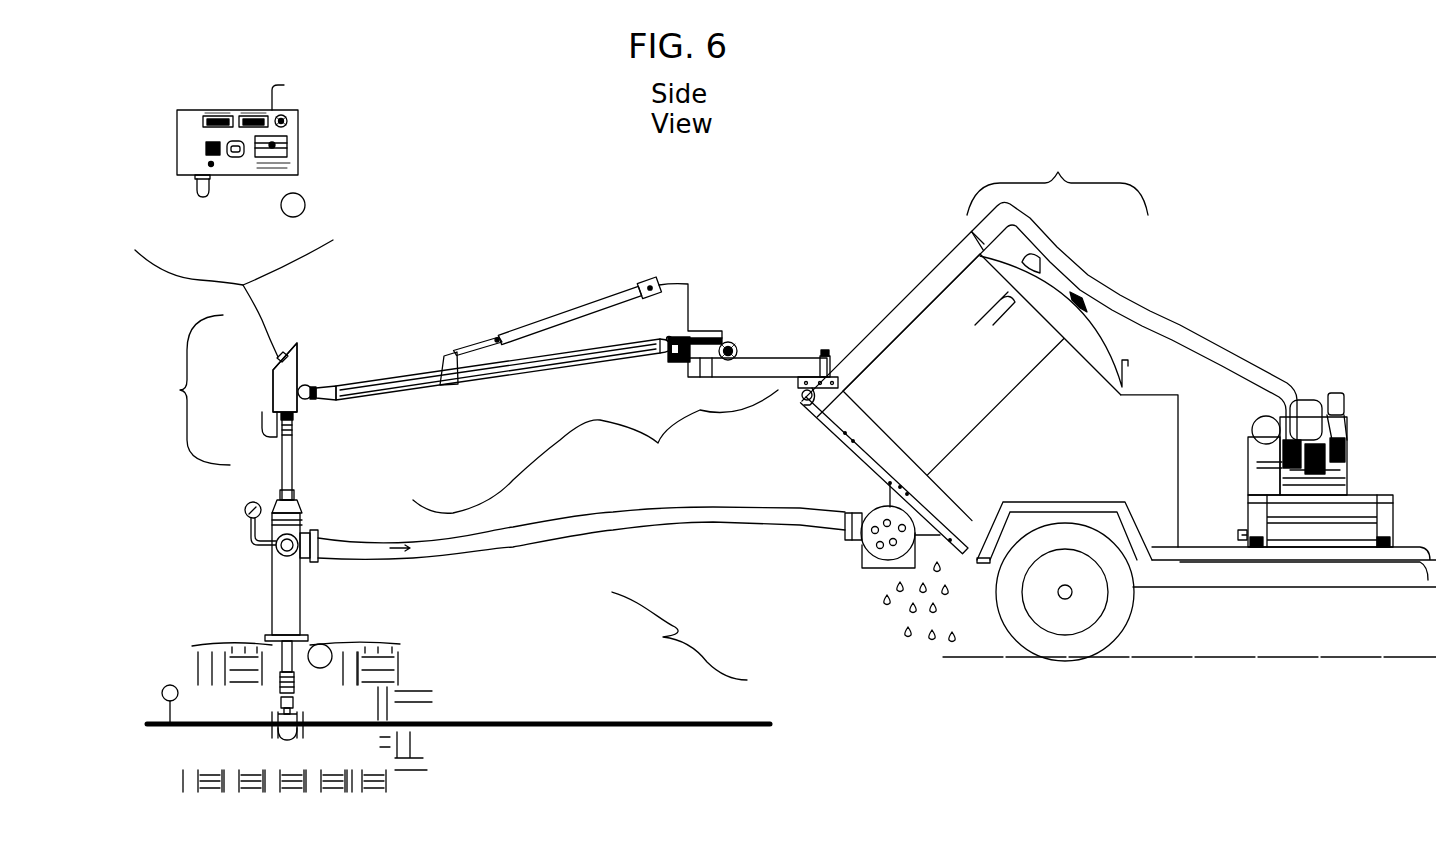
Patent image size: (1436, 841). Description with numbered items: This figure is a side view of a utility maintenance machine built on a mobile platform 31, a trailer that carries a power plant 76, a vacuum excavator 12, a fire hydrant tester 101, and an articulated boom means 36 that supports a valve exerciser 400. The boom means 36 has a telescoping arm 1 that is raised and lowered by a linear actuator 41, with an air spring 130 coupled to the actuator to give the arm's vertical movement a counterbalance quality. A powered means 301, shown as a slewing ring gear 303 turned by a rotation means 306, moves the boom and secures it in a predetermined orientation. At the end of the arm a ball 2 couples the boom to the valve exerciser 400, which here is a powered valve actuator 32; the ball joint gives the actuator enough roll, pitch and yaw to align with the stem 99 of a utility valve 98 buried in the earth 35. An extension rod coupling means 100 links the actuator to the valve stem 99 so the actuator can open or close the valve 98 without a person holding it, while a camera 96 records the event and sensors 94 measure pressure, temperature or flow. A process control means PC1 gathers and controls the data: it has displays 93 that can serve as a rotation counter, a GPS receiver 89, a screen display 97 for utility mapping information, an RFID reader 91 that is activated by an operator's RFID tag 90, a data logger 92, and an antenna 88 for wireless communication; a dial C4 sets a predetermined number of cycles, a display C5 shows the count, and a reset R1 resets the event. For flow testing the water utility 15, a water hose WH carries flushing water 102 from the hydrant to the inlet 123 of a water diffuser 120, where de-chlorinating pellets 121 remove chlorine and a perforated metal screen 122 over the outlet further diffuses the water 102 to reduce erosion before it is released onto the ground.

The boom arm 1 is at (330, 400).
The ball 2 is at (307, 400).
The vacuum excavator 12 is at (1058, 168).
The water utility 15 is at (143, 727).
The mobile platform 31 is at (1155, 575).
The powered valve actuator 32 is at (280, 387).
The earth 35 is at (395, 646).
The articulated boom means 36 is at (595, 451).
The linear actuator 41 is at (617, 298).
The power plant 76 is at (1395, 395).
The antenna 88 is at (283, 89).
The GPS signal receiver 89 is at (290, 120).
The RFID tag 90 is at (293, 217).
The RFID reader 91 is at (236, 157).
The data logger 92 is at (202, 193).
The displays 93 is at (267, 114).
The sensors 94 is at (244, 527).
The camera 96 is at (268, 433).
The utility mapping display 97 is at (287, 153).
The utility valve 98 is at (300, 730).
The valve stem 99 is at (283, 703).
The coupling means 100 is at (289, 482).
The fire hydrant tester 101 is at (667, 634).
The water 102 is at (913, 611).
The water diffuser 120 is at (872, 573).
The de-chlorinating pellets 121 is at (878, 545).
The perforated metal screen 122 is at (892, 571).
The inlet 123 is at (858, 505).
The air spring 130 is at (463, 353).
The powered means 301 is at (700, 355).
The slewing ring gear 303 is at (673, 360).
The rotation means 306 is at (740, 343).
The valve exerciser 400 is at (176, 391).
The process control means PC1 is at (178, 110).
The dial C4 is at (206, 146).
The display C5 is at (206, 155).
The reset R1 is at (213, 167).
The water hose WH is at (547, 540).